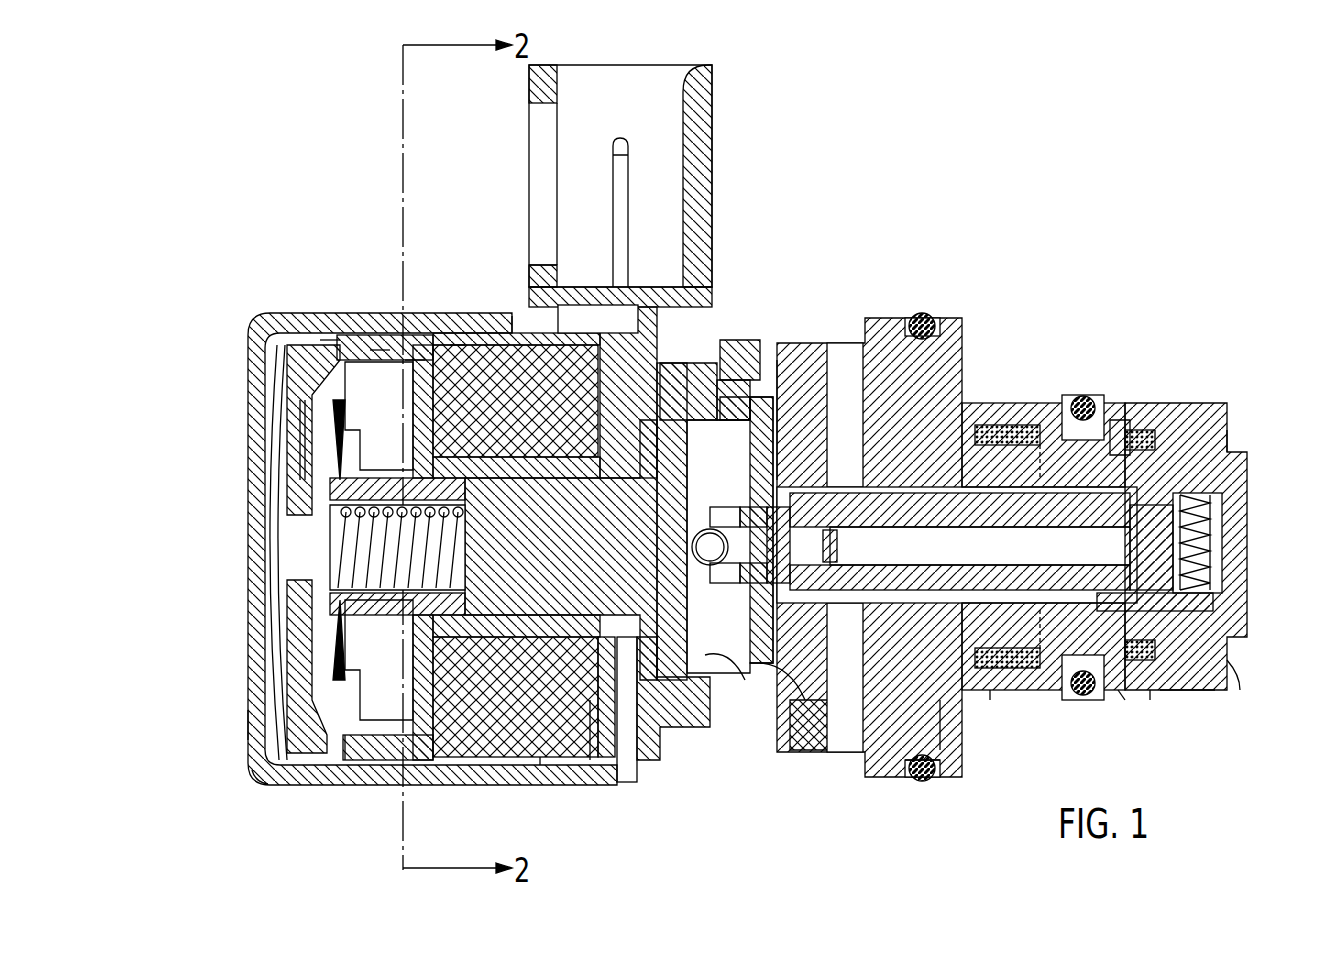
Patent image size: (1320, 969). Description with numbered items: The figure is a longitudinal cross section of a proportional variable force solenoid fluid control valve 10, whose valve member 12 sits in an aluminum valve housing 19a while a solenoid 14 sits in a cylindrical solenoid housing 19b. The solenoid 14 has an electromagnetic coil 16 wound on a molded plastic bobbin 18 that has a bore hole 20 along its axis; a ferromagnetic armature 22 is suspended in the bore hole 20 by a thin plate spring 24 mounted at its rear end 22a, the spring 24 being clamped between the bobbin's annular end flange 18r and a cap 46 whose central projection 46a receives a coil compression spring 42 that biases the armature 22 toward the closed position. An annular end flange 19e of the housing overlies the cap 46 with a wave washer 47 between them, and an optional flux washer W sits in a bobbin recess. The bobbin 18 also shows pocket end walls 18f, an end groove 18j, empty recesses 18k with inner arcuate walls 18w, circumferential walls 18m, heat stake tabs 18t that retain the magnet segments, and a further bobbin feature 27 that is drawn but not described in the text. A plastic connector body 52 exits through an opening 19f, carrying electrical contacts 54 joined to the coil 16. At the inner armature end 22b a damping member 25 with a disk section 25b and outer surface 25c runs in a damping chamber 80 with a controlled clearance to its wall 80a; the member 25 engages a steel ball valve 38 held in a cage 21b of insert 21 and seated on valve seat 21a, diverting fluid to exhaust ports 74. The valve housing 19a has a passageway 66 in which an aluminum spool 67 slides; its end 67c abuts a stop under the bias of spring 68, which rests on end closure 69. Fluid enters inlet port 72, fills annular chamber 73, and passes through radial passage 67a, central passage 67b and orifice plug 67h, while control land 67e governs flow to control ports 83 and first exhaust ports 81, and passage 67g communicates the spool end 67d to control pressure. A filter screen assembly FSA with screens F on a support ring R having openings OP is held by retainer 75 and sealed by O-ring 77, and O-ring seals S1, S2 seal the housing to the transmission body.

The proportional variable force solenoid fluid control valve 10 is at (985, 248).
The valve member 12 is at (1108, 330).
The solenoid 14 is at (262, 786).
The electromagnetic solenoid coil 16 is at (543, 757).
The bobbin 18 is at (598, 300).
The axial pocket end wall 18f is at (455, 345).
The annular circumferential end groove 18j is at (340, 760).
The recess 18k is at (402, 435).
The continuous circumferential walls 18m is at (372, 352).
The annular end flange 18r is at (322, 342).
The heat stake tabs 18t is at (345, 640).
The inner arcuate wall 18w is at (330, 490).
The valve housing 19a is at (955, 735).
The solenoid housing 19b is at (258, 771).
The annular end flange 19e is at (252, 726).
The opening 19f is at (522, 326).
The bore hole 20 is at (488, 700).
The ball valve cage insert 21 is at (745, 392).
The valve seat 21a is at (714, 572).
The cage 21b is at (736, 515).
The armature 22 is at (571, 555).
The rear outermost end of armature 22a is at (415, 360).
The inner end of armature 22b is at (588, 745).
The spring 24 is at (300, 462).
The damping member 25 is at (717, 395).
The disk shaped section 25b is at (740, 390).
The cylindrical outer peripheral surface 25c is at (702, 730).
The lower bobbin wall 27 is at (340, 628).
The ball valve 38 is at (708, 528).
The coil compression spring 42 is at (330, 570).
The valve housing cap 46 is at (300, 362).
The central axially extending projection 46a is at (290, 542).
The wave washer 47 is at (272, 400).
The connector body 52 is at (712, 160).
The electrical contacts 54 is at (622, 172).
The longitudinal passageway 66 is at (888, 350).
The spool 67 is at (950, 340).
The radial fluid passage 67a is at (1120, 568).
The longitudinal central passage 67b is at (1045, 547).
The spool end 67c is at (805, 370).
The spool end 67d is at (1218, 565).
The annular spool control land 67e is at (1028, 425).
The passage 67g is at (1222, 448).
The orifice plug 67h is at (835, 545).
The spring 68 is at (1212, 512).
The end closure 69 is at (1238, 668).
The inlet port 72 is at (1160, 435).
The annular chamber 73 is at (1150, 625).
The exhaust ports 74 is at (810, 705).
The retainer 75 is at (1218, 695).
The O-ring 77 is at (1078, 392).
The damping chamber 80 is at (770, 690).
The chamber wall 80a is at (735, 700).
The first exhaust ports 81 is at (848, 750).
The control ports 83 is at (1015, 670).
The filter screens F is at (1152, 685).
The fluid filter screen assembly FSA is at (1113, 698).
The openings OP is at (1145, 415).
The filter support ring R is at (1118, 418).
The O-ring seal S1 is at (920, 782).
The O-ring seal S2 is at (1085, 700).
The flux washer W is at (627, 782).